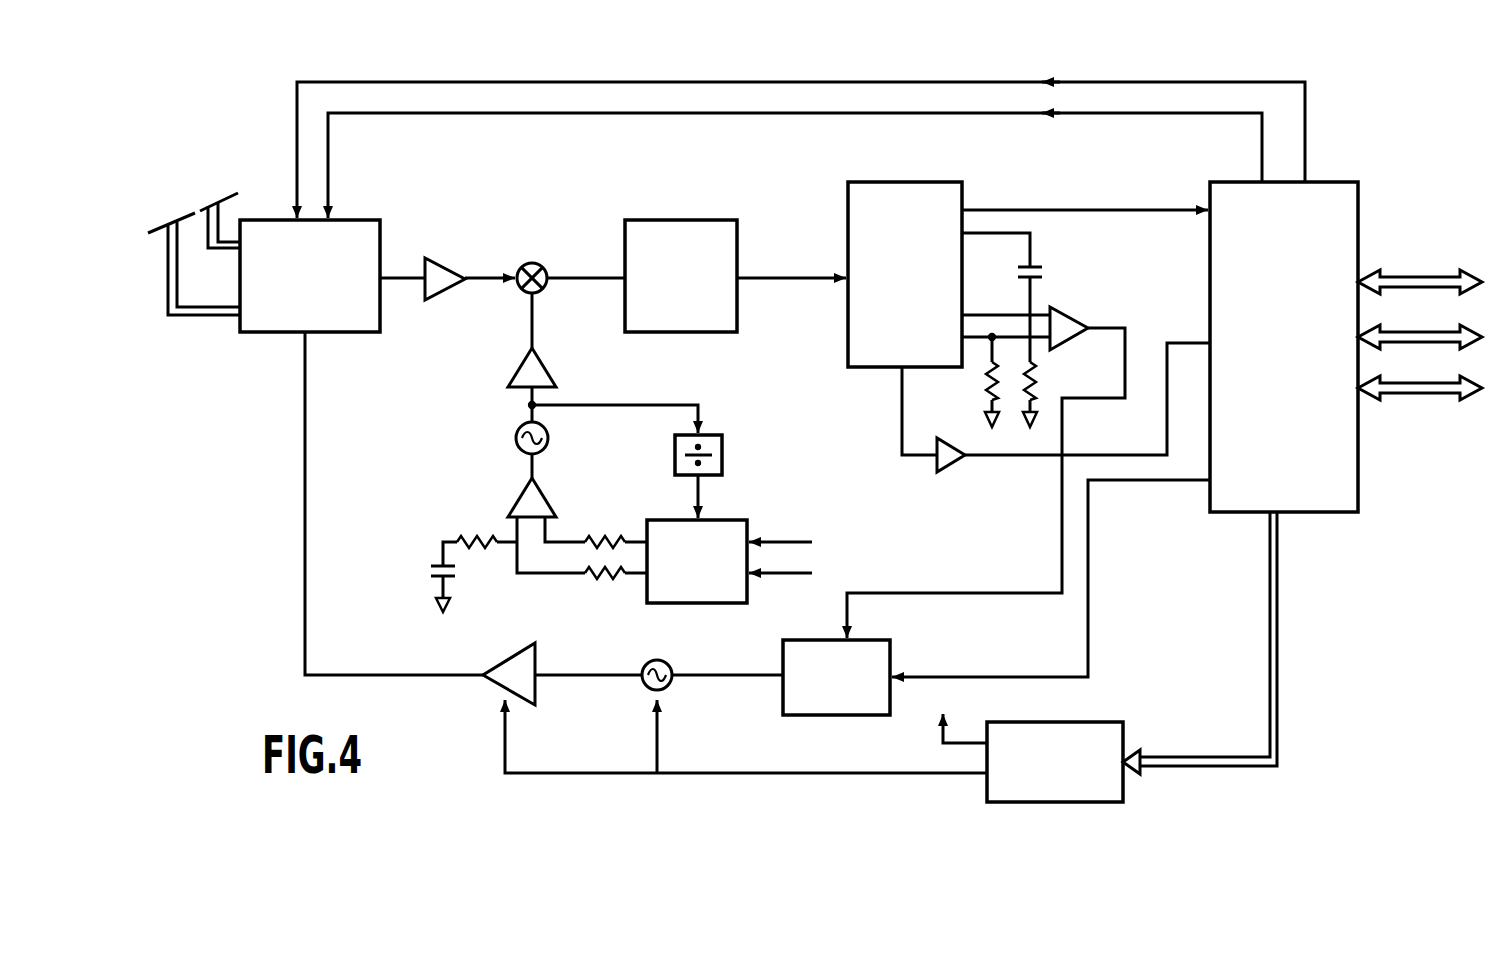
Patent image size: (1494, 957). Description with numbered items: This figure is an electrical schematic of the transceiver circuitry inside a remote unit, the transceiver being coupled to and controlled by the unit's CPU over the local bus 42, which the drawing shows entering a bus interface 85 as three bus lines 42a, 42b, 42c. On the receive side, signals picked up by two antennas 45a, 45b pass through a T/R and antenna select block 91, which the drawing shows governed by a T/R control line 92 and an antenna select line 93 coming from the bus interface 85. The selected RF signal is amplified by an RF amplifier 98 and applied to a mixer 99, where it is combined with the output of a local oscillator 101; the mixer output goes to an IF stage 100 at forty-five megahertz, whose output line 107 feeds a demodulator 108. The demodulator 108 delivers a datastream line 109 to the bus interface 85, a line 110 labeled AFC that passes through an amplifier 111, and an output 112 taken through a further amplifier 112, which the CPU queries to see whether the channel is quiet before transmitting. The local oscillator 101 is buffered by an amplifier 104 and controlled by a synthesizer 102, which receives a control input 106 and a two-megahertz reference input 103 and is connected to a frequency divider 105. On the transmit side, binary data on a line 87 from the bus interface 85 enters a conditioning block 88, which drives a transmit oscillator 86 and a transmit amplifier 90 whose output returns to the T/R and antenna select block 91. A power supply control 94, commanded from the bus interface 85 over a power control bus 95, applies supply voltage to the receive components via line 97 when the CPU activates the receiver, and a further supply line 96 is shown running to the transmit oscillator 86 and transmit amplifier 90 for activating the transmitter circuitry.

The local bus 42 is at (1381, 404).
The bus line 42a is at (1392, 277).
The bus line 42b is at (1389, 332).
The bus line 42c is at (1389, 383).
The antenna 45a is at (227, 193).
The antenna 45b is at (170, 230).
The bus interface 85 is at (1300, 512).
The transmit oscillator 86 is at (672, 662).
The binary data line 87 is at (1023, 677).
The conditioning circuit 88 is at (862, 715).
The transmit amplifier 90 is at (498, 680).
The T/R and antenna select switch 91 is at (275, 332).
The T/R control line 92 is at (595, 80).
The antenna select line 93 is at (497, 116).
The power supply control 94 is at (1093, 722).
The power control bus 95 is at (1280, 680).
The power supply line 96 is at (875, 773).
The power supply line 97 is at (942, 743).
The RF amplifier 98 is at (444, 258).
The mixer 99 is at (538, 263).
The IF amplifier 45 MHz 100 is at (710, 219).
The local oscillator 101 is at (516, 438).
The synthesizer 102 is at (722, 518).
The 2 MHz reference input 103 is at (783, 575).
The oscillator buffer amplifier 104 is at (517, 500).
The frequency divider 105 is at (722, 455).
The synthesizer control input 106 is at (778, 540).
The IF output line 107 is at (782, 277).
The demodulator 108 is at (873, 367).
The datastream line 109 is at (985, 207).
The AFC line 110 is at (1060, 523).
The comparator amplifier 111 is at (1073, 310).
The output 112 is at (975, 458).